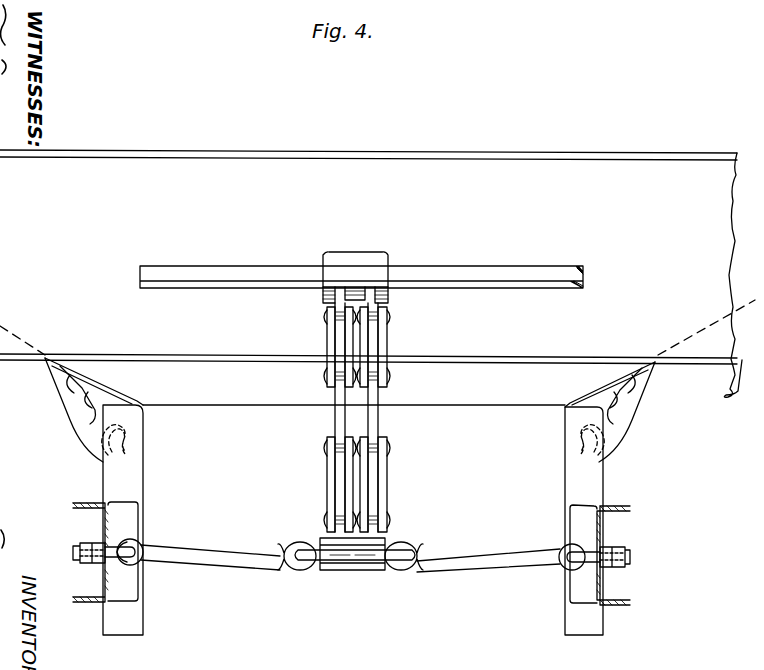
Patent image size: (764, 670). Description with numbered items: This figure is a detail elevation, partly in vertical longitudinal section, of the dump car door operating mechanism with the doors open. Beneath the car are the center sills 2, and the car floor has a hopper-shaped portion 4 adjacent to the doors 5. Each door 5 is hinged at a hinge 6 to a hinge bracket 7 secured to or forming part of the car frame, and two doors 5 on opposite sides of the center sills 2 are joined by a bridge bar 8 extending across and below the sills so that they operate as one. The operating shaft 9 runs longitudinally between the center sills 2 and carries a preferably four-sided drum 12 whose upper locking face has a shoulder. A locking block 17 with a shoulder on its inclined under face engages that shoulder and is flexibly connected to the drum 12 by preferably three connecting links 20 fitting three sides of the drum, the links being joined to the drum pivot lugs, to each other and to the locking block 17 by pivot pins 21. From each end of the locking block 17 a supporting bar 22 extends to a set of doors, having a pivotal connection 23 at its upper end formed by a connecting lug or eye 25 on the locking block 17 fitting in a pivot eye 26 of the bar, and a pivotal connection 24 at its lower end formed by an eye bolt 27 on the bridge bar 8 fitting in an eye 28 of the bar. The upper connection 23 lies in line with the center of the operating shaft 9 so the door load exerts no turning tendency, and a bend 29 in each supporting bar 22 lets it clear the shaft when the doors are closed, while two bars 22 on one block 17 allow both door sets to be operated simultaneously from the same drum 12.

The center sills 2 is at (377, 273).
The hopper portion 4 is at (354, 388).
The doors 5 is at (144, 480).
The hinge 6 is at (568, 415).
The hinge brackets 7 is at (637, 403).
The bridge bar 8 is at (88, 604).
The operating shaft 9 is at (493, 276).
The drum 12 is at (372, 256).
The locking block 17 is at (368, 571).
The connecting links 20 is at (383, 342).
The pivot pins 21 is at (390, 320).
The supporting bar 22 is at (222, 571).
The pivotal connection 23 is at (305, 576).
The pivotal connection 24 is at (157, 541).
The connecting lug or eye 25 is at (425, 553).
The pivot eye 26 is at (400, 571).
The eye bolt 27 is at (78, 557).
The eye 28 is at (148, 566).
The bend 29 is at (268, 573).